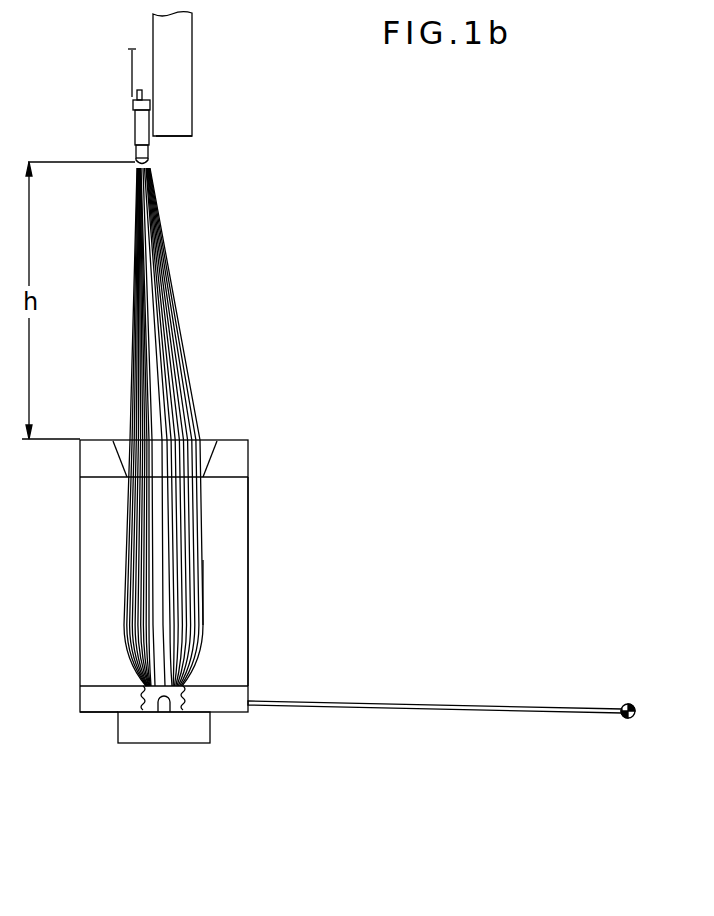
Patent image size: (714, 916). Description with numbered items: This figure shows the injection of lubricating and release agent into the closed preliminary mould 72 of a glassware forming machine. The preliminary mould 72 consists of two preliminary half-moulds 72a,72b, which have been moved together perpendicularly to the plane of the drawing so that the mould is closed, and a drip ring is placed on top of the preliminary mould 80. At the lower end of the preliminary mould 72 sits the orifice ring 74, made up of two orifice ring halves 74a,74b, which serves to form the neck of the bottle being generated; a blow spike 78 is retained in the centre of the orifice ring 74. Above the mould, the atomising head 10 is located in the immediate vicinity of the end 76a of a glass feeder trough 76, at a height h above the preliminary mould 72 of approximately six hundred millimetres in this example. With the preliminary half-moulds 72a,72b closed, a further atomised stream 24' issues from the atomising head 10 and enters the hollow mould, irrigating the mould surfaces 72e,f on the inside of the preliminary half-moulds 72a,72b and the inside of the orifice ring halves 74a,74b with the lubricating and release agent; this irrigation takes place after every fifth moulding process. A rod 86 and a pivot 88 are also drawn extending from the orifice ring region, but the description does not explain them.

The atomising head 10 is at (134, 128).
The glass feeder trough 76 is at (185, 31).
The end of glass feeder trough 76a is at (178, 137).
The further atomised stream 24' is at (183, 427).
The preliminary mould 80 is at (243, 455).
The preliminary mould 72 is at (80, 572).
The preliminary half-moulds 72a,72b is at (246, 546).
The mould surfaces 72e,f is at (204, 583).
The orifice ring 74 is at (235, 712).
The orifice ring halves 74a,74b is at (93, 712).
The blow spike 78 is at (163, 712).
The lever / rod 86 is at (406, 699).
The pivot 88 is at (628, 704).